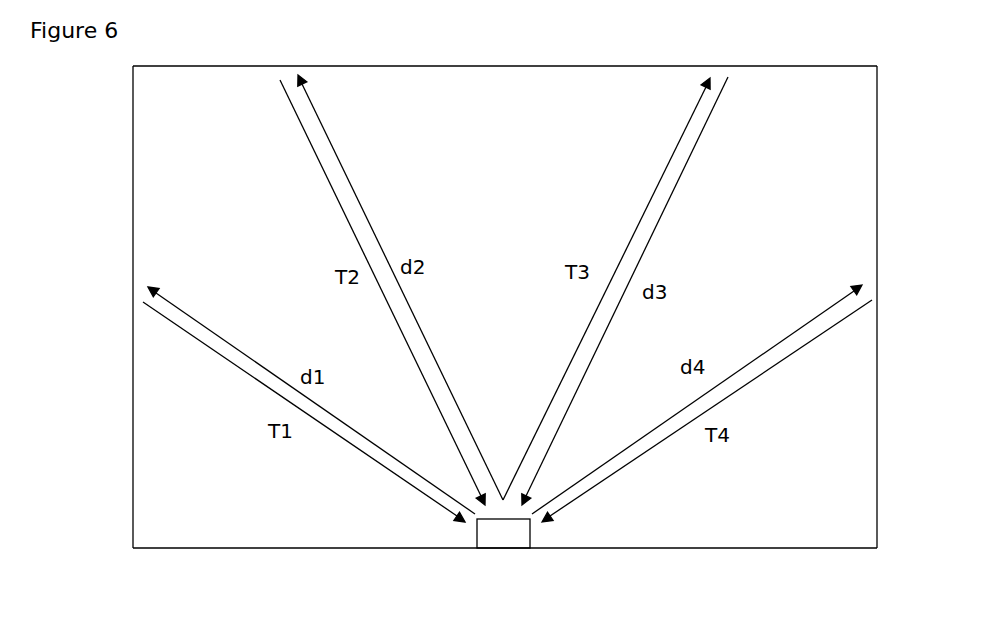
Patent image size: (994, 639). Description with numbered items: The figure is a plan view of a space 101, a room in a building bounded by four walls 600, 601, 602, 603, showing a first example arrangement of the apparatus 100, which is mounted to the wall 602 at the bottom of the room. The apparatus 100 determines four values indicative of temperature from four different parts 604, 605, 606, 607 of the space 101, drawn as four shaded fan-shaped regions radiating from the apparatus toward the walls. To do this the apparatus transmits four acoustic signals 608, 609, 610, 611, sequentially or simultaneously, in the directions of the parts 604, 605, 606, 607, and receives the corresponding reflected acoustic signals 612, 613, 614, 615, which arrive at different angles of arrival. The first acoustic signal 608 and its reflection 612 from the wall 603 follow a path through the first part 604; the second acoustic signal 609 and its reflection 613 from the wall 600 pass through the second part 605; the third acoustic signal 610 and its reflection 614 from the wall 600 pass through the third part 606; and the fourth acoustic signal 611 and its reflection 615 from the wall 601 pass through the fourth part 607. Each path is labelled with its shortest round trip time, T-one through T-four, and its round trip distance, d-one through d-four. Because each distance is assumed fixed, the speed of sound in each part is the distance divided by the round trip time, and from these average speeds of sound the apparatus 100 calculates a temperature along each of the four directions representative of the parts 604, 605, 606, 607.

The apparatus 100 is at (505, 535).
The space 101 is at (537, 57).
The wall 600 is at (518, 308).
The wall 601 is at (880, 343).
The wall 602 is at (778, 548).
The wall 603 is at (130, 267).
The first part of the space 604 is at (148, 213).
The second part of the space 605 is at (232, 78).
The third part of the space 606 is at (780, 80).
The fourth part of the space 607 is at (863, 232).
The first acoustic signal 608 is at (193, 318).
The second acoustic signal 609 is at (348, 187).
The third acoustic signal 610 is at (668, 162).
The fourth acoustic signal 611 is at (782, 342).
The reflected acoustic signal 612 is at (202, 348).
The reflected acoustic signal 613 is at (312, 147).
The reflected acoustic signal 614 is at (675, 190).
The reflected acoustic signal 615 is at (773, 363).